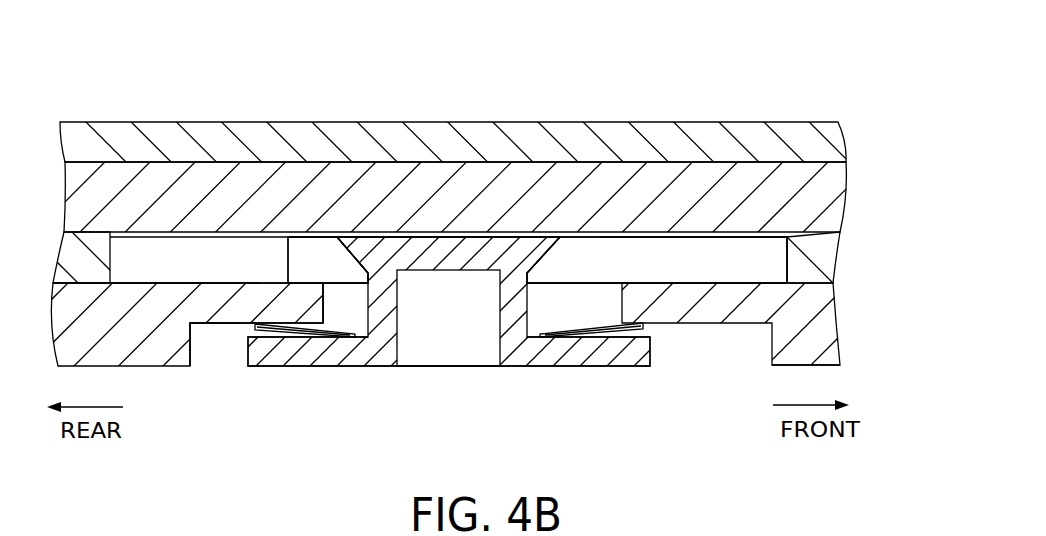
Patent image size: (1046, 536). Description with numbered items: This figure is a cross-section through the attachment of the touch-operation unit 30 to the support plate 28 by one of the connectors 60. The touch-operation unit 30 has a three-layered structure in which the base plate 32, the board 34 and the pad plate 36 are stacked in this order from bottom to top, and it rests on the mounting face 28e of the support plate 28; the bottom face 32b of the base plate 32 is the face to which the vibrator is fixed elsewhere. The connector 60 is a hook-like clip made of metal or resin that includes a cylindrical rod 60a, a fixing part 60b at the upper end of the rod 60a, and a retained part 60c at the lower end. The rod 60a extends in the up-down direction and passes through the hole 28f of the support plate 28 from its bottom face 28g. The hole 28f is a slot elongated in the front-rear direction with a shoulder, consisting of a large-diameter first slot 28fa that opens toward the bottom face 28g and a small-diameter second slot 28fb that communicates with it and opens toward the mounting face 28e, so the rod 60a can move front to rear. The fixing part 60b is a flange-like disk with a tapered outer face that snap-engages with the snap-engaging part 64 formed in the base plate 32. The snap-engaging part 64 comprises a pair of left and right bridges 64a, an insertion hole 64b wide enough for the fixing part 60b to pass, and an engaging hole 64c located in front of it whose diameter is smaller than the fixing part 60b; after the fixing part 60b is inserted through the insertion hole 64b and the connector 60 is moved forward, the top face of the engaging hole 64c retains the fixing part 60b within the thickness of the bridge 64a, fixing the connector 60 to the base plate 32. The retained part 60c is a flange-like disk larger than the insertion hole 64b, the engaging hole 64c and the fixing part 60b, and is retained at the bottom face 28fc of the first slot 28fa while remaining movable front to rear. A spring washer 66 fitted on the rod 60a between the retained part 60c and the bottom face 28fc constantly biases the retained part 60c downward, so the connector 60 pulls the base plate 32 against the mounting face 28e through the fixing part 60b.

The support plate 28 is at (455, 260).
The mounting face 28e is at (186, 283).
The hole 28f is at (282, 379).
The first slot 28fa is at (228, 357).
The second slot 28fb is at (357, 300).
The bottom face of first slot 28fc is at (208, 325).
The bottom face 28g is at (789, 366).
The touch-operation unit 30 is at (493, 297).
The base plate 32 is at (468, 352).
The bottom face of base plate 32b is at (167, 287).
The board 34 is at (826, 197).
The pad plate 36 is at (835, 140).
The connector 60 is at (442, 250).
The rod 60a is at (397, 308).
The fixing part 60b is at (533, 255).
The retained part 60c is at (562, 355).
The snap-engaging part 64 is at (537, 164).
The bridge 64a is at (693, 257).
The insertion hole 64b is at (313, 257).
The engaging hole 64c is at (540, 275).
The spring washer 66 is at (630, 338).